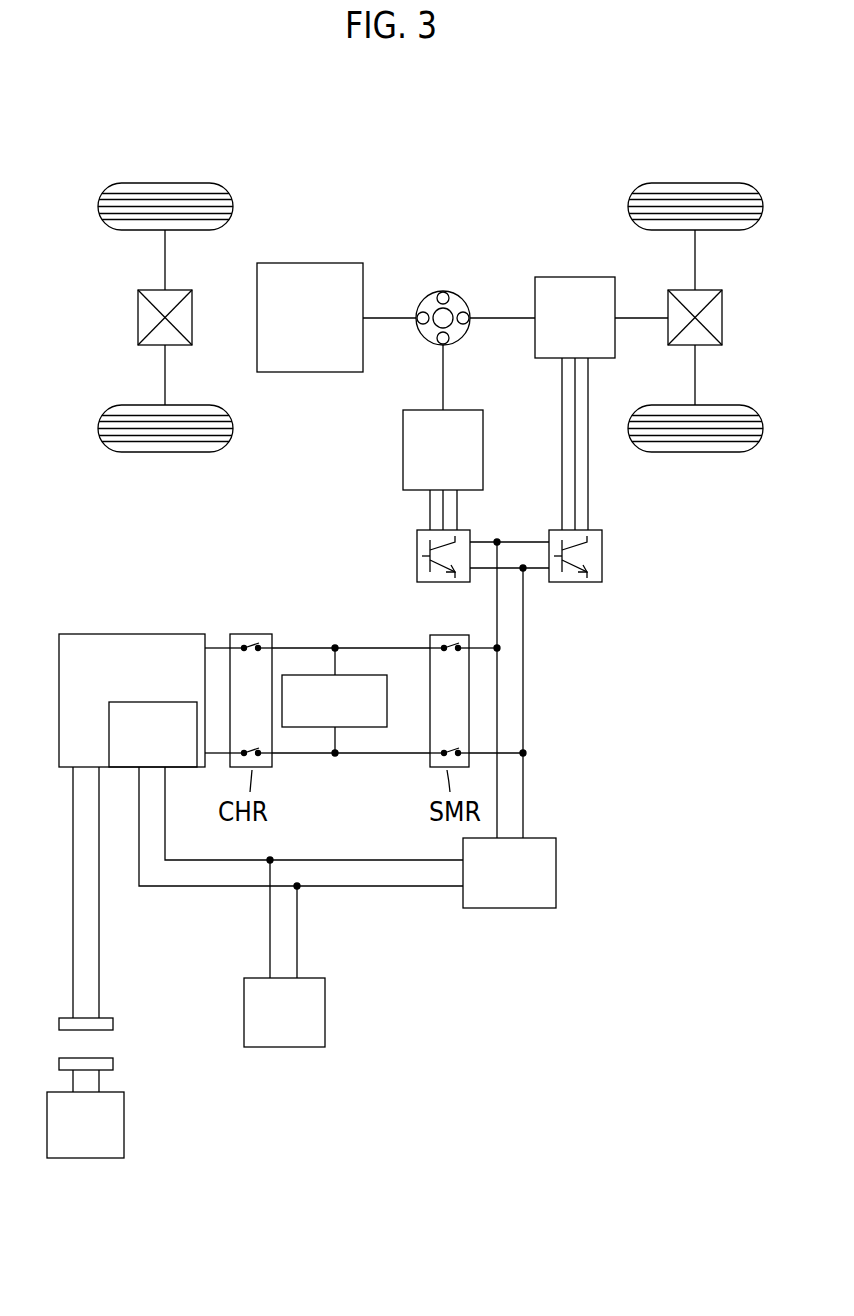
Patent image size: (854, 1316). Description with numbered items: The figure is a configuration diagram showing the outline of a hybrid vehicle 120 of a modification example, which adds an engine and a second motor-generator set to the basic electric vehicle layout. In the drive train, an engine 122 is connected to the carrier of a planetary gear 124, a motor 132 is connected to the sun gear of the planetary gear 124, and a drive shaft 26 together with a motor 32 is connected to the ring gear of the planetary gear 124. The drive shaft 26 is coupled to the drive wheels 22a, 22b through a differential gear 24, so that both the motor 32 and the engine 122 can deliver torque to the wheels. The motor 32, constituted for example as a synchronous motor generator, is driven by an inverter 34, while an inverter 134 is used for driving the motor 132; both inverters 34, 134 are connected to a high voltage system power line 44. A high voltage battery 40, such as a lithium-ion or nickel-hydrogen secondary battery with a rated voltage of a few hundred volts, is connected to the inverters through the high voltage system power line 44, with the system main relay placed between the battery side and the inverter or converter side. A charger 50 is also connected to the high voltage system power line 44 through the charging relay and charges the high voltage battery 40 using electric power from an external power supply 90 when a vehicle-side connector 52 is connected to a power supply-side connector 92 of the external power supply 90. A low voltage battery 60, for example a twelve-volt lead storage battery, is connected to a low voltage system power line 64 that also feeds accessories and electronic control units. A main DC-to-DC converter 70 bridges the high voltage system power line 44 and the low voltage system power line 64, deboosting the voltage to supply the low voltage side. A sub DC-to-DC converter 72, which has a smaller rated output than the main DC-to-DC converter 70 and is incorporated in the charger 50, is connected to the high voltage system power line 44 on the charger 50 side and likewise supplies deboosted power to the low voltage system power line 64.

The hybrid vehicle 120 is at (521, 158).
The drive wheel 22a is at (690, 183).
The drive wheel 22b is at (695, 454).
The differential gear 24 is at (703, 290).
The drive shaft 26 is at (640, 317).
The motor 32 is at (572, 277).
The inverter 34 is at (603, 557).
The high voltage battery 40 is at (323, 728).
The high voltage system power line 44 is at (410, 752).
The charger 50 is at (125, 634).
The vehicle-side connector 52 is at (113, 1024).
The low voltage battery 60 is at (283, 1047).
The low voltage system power line 64 is at (327, 885).
The main DC-to-DC converter 70 is at (505, 908).
The sub DC-to-DC converter 72 is at (175, 702).
The external power supply 90 is at (124, 1125).
The power supply-side connector 92 is at (113, 1064).
The engine 122 is at (308, 263).
The planetary gear 124 is at (443, 291).
The motor 132 is at (468, 410).
The inverter 134 is at (417, 557).